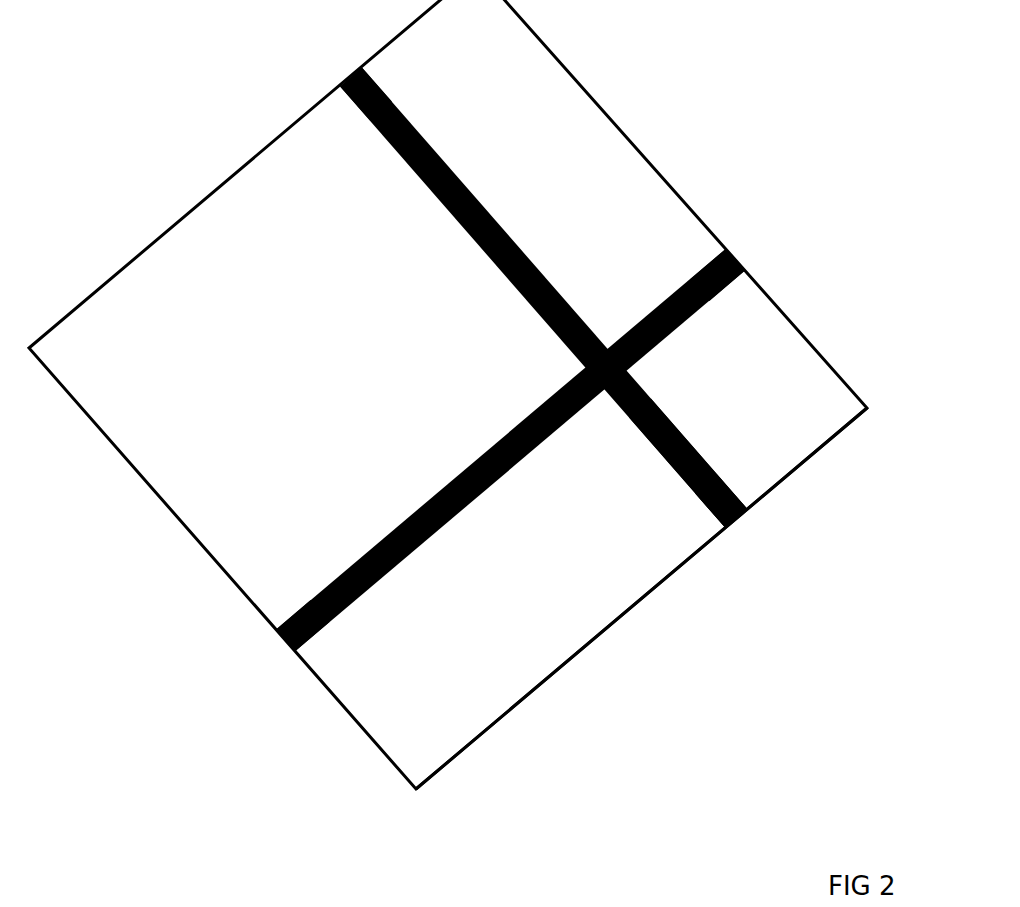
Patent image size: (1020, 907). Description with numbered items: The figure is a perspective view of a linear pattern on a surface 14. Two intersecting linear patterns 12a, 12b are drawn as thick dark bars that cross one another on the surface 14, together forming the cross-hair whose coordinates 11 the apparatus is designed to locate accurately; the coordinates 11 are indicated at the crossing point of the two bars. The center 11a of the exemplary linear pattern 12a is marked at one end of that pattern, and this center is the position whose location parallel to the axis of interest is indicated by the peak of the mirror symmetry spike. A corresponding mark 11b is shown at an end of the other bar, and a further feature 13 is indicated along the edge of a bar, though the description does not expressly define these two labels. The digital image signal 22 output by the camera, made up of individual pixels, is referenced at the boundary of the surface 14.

The coordinates 11 is at (630, 368).
The center of linear pattern 11a is at (745, 246).
The second end of electrode strip 11b is at (748, 529).
The linear pattern 12a is at (317, 595).
The linear pattern 12b is at (378, 83).
The electrode strip edge 13 is at (715, 473).
The surface 14 is at (537, 100).
The digital image signal 22 is at (472, 742).